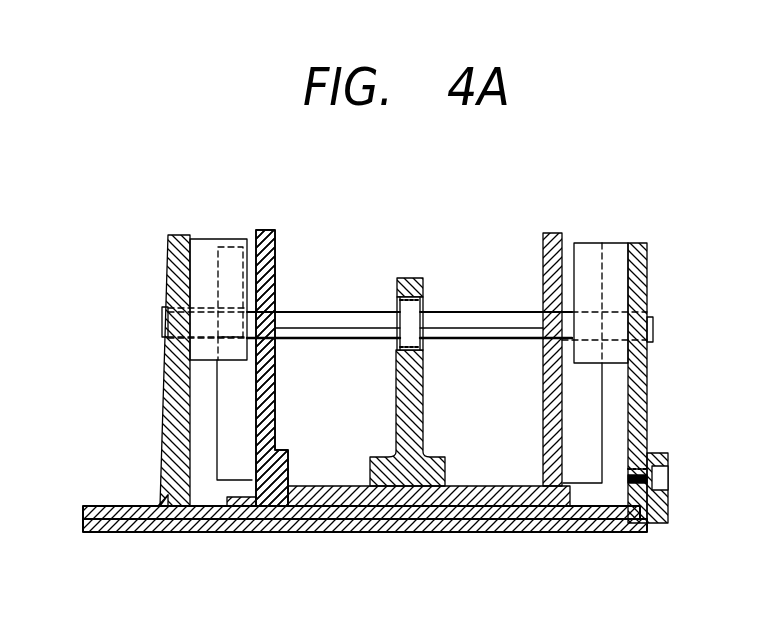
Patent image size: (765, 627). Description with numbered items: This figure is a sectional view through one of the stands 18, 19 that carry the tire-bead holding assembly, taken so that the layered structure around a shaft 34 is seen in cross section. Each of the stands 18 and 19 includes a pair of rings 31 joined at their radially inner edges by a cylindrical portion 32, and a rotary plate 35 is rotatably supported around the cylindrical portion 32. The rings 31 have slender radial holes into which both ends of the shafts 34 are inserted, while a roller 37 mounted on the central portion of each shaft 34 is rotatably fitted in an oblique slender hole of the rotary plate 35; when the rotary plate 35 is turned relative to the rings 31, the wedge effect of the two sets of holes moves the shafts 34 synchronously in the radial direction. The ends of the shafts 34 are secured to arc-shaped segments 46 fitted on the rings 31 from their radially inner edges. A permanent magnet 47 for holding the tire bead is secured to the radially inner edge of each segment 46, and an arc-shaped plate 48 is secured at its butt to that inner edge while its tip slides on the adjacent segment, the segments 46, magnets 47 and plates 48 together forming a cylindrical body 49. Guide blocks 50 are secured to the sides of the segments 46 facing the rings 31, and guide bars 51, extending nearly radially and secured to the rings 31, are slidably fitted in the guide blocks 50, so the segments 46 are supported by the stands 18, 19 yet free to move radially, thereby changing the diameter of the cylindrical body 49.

The stand 18 is at (276, 232).
The stand 19 is at (284, 228).
The ring 31 is at (272, 422).
The cylindrical portion 32 is at (488, 487).
The shaft 34 is at (338, 311).
The rotary plate 35 is at (422, 410).
The roller 37 is at (423, 350).
The arc-shaped segment 46 is at (640, 395).
The permanent magnet 47 is at (668, 520).
The arc-shaped plate 48 is at (523, 533).
The cylindrical body 49 is at (429, 533).
The guide block 50 is at (207, 238).
The guide bar 51 is at (227, 423).